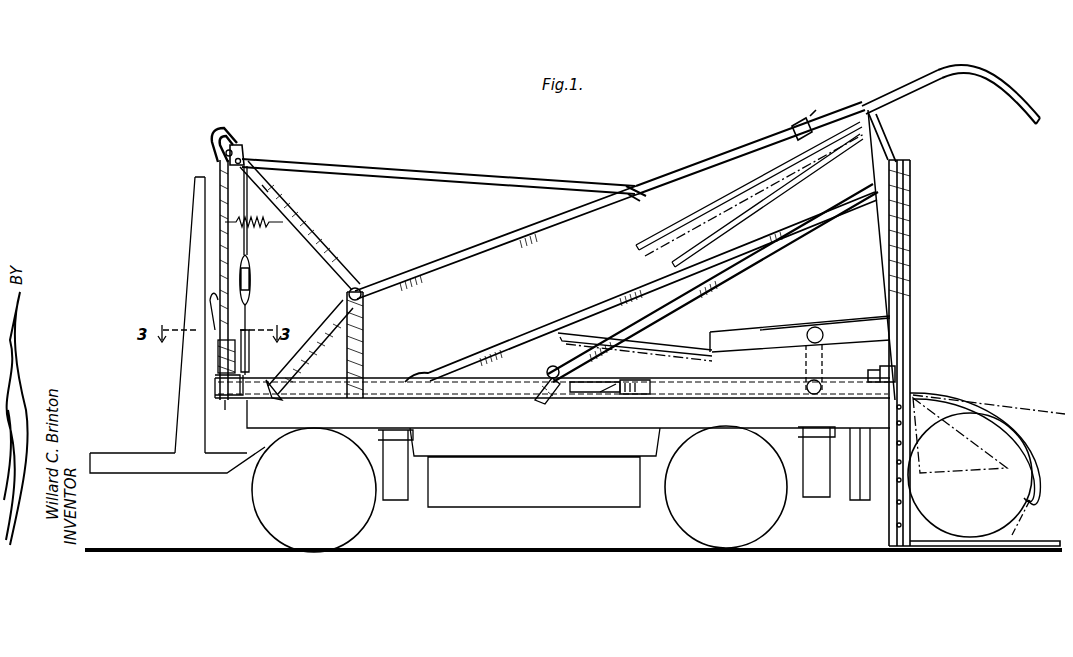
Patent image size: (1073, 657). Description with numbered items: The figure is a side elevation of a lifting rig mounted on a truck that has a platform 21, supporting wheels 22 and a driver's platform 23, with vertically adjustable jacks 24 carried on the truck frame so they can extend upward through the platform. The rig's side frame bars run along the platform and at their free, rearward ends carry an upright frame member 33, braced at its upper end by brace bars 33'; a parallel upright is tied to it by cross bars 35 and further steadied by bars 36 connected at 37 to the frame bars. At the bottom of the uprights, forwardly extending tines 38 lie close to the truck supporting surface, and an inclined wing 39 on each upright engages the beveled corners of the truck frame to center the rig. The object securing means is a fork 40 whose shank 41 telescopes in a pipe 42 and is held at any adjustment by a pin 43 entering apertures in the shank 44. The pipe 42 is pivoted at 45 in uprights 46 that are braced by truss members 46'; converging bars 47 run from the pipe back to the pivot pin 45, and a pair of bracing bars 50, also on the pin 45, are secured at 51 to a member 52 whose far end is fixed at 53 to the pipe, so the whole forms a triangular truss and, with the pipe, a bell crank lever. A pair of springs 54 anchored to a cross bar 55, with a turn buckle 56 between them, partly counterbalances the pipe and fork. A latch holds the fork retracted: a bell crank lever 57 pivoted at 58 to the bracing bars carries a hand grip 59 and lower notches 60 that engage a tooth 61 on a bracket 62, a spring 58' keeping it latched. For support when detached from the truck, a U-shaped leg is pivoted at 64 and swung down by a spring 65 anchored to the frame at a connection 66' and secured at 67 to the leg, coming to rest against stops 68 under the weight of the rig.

The platform 21 is at (690, 415).
The supporting wheels 22 is at (262, 490).
The driver's platform 23 is at (132, 438).
The vertically adjustable jacks 24 is at (815, 480).
The upright frame member 33 is at (907, 359).
The brace bars 33' is at (641, 287).
The cross bars 35 is at (892, 162).
The bars 36 is at (742, 262).
The connection 37 is at (560, 376).
The tines 38 is at (1018, 506).
The wing 39 is at (915, 396).
The fork 40 is at (966, 70).
The shank 41 is at (900, 86).
The pipe 42 is at (738, 145).
The pin 43 is at (798, 130).
The shank 44 is at (834, 118).
The pivot pin 45 is at (362, 292).
The uprights 46 is at (379, 345).
The truss members 46' is at (309, 343).
The converging bars 47 is at (458, 255).
The bracing bars 50 is at (292, 218).
The connection 51 is at (244, 156).
The member 52 is at (382, 174).
The connection 53 is at (636, 188).
The springs 54 is at (248, 225).
The cross bar 55 is at (246, 388).
The turn buckle 56 is at (252, 280).
The bell crank lever 57 is at (222, 170).
The pivot 58 is at (241, 122).
The spring 58' is at (294, 160).
The hand grip 59 is at (212, 140).
The notches 60 is at (214, 303).
The tooth 61 is at (217, 360).
The bracket 62 is at (226, 372).
The pivot 64 is at (704, 352).
The spring 65 is at (590, 394).
The pivot 66' is at (543, 396).
The spring connection 67 is at (626, 394).
The stop 68 is at (610, 394).